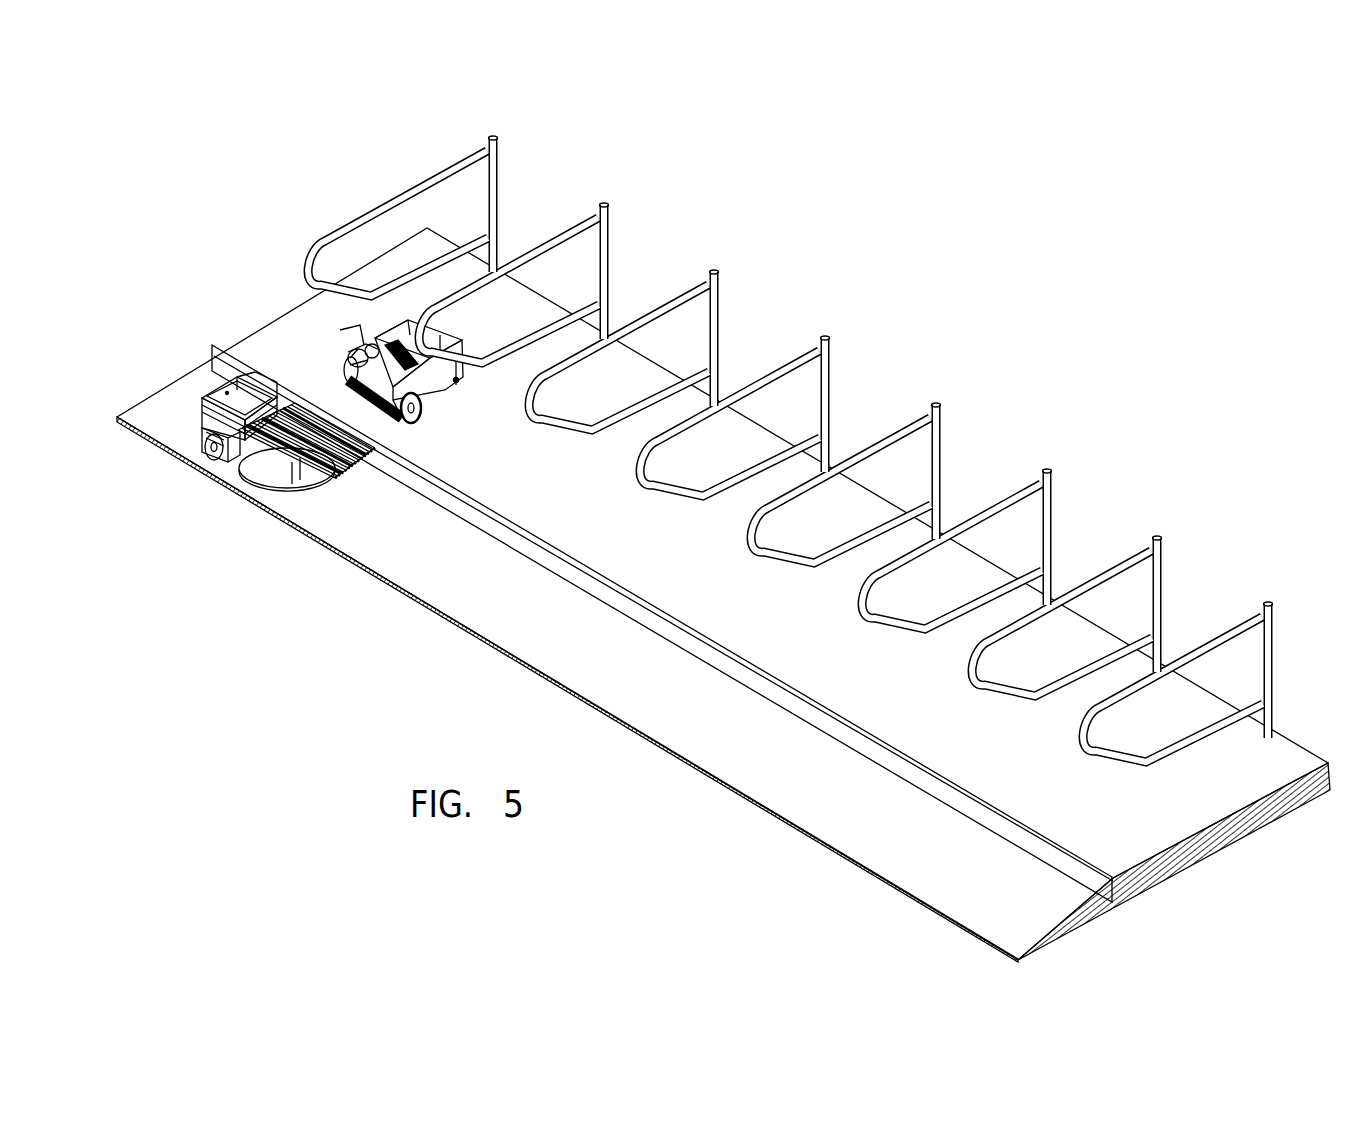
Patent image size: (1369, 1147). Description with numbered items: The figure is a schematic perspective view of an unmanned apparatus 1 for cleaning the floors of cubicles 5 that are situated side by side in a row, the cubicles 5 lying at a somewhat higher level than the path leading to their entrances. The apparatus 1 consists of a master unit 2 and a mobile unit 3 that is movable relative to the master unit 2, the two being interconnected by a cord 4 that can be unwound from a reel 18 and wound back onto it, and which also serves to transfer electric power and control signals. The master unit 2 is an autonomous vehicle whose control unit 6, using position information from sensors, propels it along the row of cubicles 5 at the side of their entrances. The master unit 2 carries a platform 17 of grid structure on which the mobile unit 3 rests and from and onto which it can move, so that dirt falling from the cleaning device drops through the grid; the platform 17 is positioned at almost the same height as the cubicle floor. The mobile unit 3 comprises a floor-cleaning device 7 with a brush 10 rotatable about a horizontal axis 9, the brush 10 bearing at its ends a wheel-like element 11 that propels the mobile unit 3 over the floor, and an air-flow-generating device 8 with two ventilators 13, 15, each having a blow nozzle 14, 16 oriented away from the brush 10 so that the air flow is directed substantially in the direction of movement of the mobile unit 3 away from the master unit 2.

The unmanned apparatus 1 is at (244, 399).
The master unit 2 is at (297, 497).
The mobile unit 3 is at (334, 386).
The cord 4 is at (326, 388).
The cubicles 5 is at (1182, 730).
The control unit 6 is at (200, 412).
The floor-cleaning device 7 is at (330, 385).
The air-flow-generating device 8 is at (361, 331).
The horizontal axis 9 is at (422, 420).
The brush 10 is at (405, 430).
The wheel-like element 11 is at (400, 445).
The ventilator 13 is at (378, 410).
The blow nozzle 14 is at (465, 323).
The ventilator 15 is at (340, 323).
The blow nozzle 16 is at (422, 340).
The platform 17 is at (348, 465).
The reel 18 is at (225, 495).